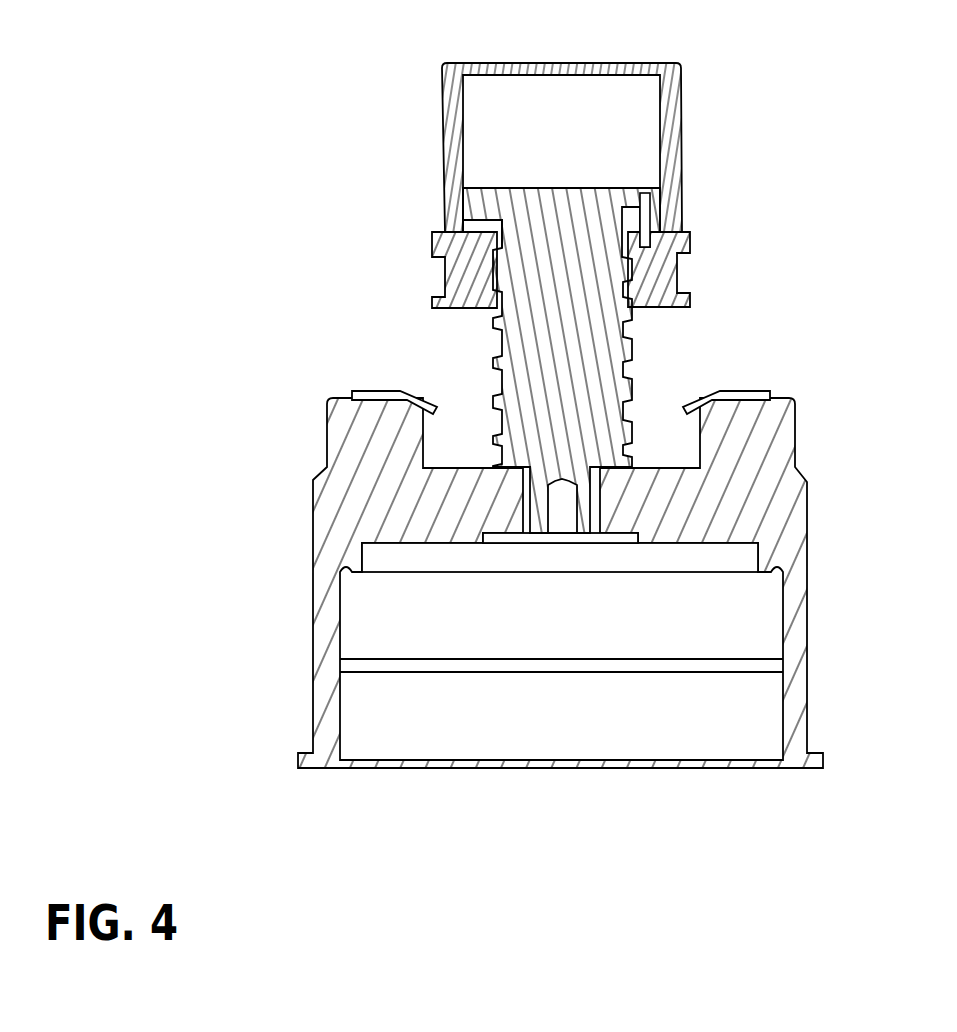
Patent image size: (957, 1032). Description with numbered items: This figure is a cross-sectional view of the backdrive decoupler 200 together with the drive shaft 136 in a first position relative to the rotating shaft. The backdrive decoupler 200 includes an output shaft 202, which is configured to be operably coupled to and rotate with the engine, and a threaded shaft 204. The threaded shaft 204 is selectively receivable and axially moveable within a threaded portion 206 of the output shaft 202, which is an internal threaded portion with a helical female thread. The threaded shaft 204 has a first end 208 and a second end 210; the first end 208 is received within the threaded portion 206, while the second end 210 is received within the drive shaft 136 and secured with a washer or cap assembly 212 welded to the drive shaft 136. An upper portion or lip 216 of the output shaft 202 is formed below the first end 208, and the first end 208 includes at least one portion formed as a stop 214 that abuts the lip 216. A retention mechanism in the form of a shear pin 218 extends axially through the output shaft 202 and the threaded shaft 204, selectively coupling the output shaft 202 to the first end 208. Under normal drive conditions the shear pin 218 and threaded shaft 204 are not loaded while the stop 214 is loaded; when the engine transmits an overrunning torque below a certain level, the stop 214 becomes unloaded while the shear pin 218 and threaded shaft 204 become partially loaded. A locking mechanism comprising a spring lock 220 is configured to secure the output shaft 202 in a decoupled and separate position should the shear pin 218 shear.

The drive shaft 136 is at (807, 613).
The backdrive decoupler 200 is at (609, 425).
The output shaft 202 is at (446, 65).
The threaded shaft 204 is at (633, 348).
The threaded portion 206 is at (655, 275).
The first end 208 is at (577, 212).
The second end 210 is at (585, 510).
The cap assembly 212 is at (502, 543).
The stop 214 is at (481, 210).
The lip 216 is at (496, 221).
The shear pin 218 is at (650, 222).
The spring lock 220 is at (375, 400).